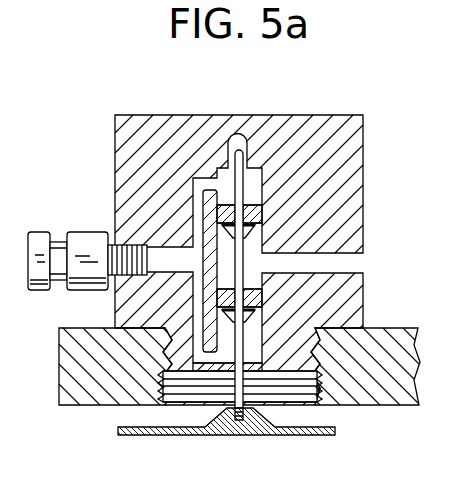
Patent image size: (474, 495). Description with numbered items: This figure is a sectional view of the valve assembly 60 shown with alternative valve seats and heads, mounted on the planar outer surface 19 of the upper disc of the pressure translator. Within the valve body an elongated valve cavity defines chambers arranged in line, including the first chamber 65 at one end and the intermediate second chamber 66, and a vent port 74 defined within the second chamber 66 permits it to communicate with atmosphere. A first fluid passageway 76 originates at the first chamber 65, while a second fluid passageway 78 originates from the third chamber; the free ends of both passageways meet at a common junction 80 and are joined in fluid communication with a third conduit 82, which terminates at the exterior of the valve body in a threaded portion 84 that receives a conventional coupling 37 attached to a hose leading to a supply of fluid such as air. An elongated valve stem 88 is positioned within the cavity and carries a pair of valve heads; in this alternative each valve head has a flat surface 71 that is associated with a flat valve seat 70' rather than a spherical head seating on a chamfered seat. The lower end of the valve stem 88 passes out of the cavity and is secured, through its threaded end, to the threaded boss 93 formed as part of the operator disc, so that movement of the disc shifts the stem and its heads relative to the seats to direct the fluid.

The planar outer surface 19 is at (408, 372).
The coupling 37 is at (40, 232).
The valve assembly 60 is at (319, 91).
The first chamber 65 is at (228, 150).
The second chamber 66 is at (262, 268).
The flat valve seat 70' is at (320, 255).
The flat surface 71 is at (260, 215).
The vent port 74 is at (358, 263).
The first fluid passageway 76 is at (192, 178).
The second fluid passageway 78 is at (165, 297).
The common junction 80 is at (193, 246).
The third conduit 82 is at (190, 257).
The threaded portion 84 is at (143, 252).
The valve stem 88 is at (250, 152).
The threaded boss 93 is at (257, 425).